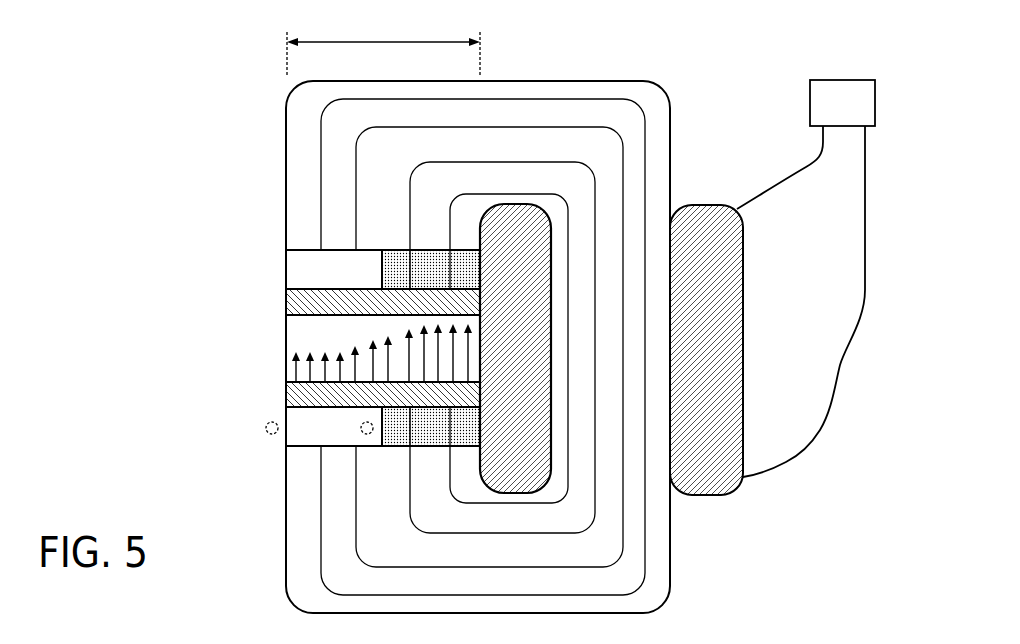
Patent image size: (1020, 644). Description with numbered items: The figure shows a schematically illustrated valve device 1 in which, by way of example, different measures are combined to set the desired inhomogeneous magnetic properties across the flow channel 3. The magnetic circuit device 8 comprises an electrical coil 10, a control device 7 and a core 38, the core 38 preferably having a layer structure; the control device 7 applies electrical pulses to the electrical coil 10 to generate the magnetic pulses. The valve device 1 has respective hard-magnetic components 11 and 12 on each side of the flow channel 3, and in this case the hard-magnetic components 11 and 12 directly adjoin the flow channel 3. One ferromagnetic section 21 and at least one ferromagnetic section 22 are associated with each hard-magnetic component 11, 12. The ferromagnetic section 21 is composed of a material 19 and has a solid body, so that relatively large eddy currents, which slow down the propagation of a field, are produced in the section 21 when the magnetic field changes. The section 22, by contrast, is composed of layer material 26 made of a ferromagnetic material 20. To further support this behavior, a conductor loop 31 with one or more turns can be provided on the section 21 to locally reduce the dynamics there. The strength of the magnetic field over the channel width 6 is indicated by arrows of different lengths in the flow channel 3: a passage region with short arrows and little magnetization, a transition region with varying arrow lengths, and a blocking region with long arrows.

The valve device 1 is at (230, 90).
The flow channel 3 is at (287, 366).
The channel width 6 is at (383, 50).
The control device 7 is at (855, 88).
The magnetic circuit device 8 is at (688, 97).
The electrical coil 10 is at (727, 258).
The hard-magnetic component 11 is at (309, 397).
The hard-magnetic component 12 is at (309, 298).
The material 19 is at (337, 264).
The ferromagnetic material 20 is at (428, 264).
The ferromagnetic section 21 is at (308, 264).
The ferromagnetic section 22 is at (462, 270).
The layer material 26 is at (392, 425).
The conductor loop 31 is at (262, 429).
The core 38 is at (586, 90).